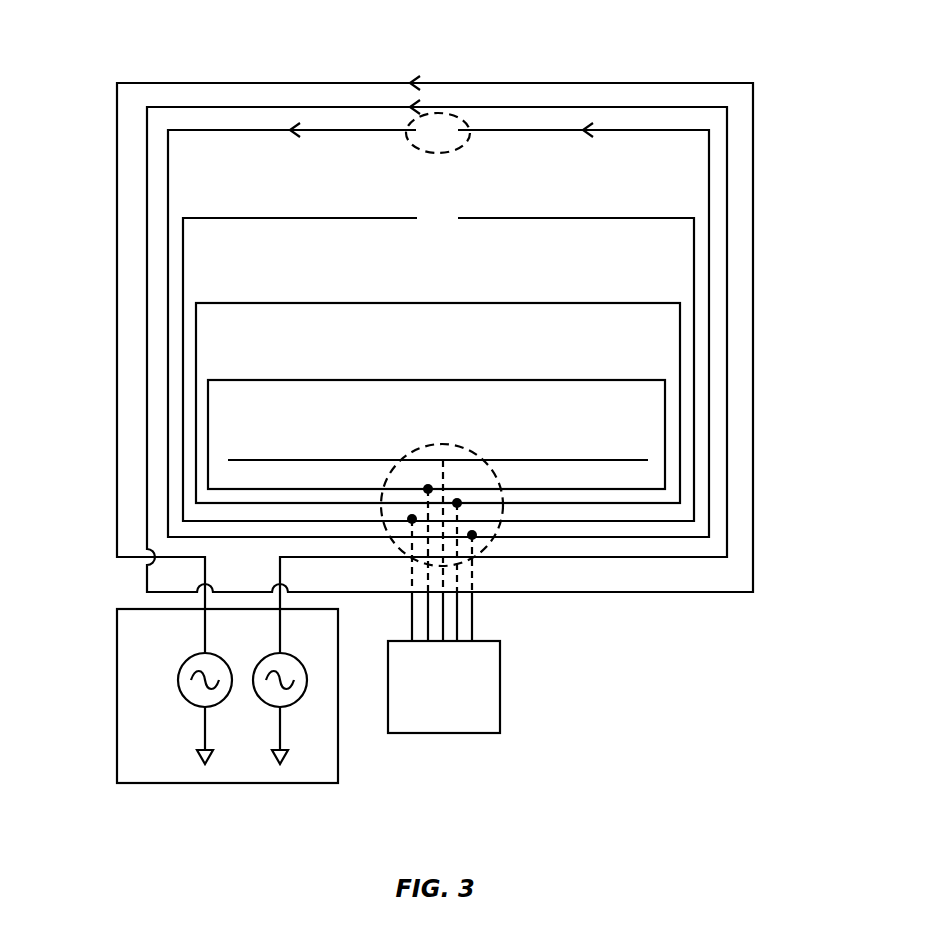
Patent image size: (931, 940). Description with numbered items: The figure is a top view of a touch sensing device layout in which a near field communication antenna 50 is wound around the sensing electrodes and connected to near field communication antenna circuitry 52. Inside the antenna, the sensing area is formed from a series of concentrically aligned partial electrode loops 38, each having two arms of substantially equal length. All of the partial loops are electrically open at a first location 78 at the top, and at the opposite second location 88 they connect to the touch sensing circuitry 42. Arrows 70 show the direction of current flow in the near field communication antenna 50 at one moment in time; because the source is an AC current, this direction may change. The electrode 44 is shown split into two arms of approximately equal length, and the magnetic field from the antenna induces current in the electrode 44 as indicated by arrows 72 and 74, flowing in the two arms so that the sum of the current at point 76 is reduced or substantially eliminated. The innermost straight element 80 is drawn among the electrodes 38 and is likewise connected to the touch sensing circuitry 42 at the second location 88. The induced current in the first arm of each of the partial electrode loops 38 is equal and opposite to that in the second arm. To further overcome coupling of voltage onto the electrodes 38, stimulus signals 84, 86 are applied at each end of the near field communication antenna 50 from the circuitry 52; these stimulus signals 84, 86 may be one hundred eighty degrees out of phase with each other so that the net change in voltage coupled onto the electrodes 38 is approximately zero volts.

The partial electrode loops 38 is at (648, 460).
The touch sensing circuitry 42 is at (500, 695).
The electrode 44 is at (651, 128).
The near field communication antenna 50 is at (117, 413).
The near field communication antenna circuitry 52 is at (117, 657).
The arrows 70 is at (416, 105).
The arrow 72 is at (298, 133).
The arrow 74 is at (589, 133).
The point 76 is at (476, 540).
The first location 78 is at (447, 115).
The conductive trace 80 is at (600, 462).
The stimulus signal 84 is at (182, 698).
The stimulus signal 86 is at (262, 703).
The second location 88 is at (470, 450).